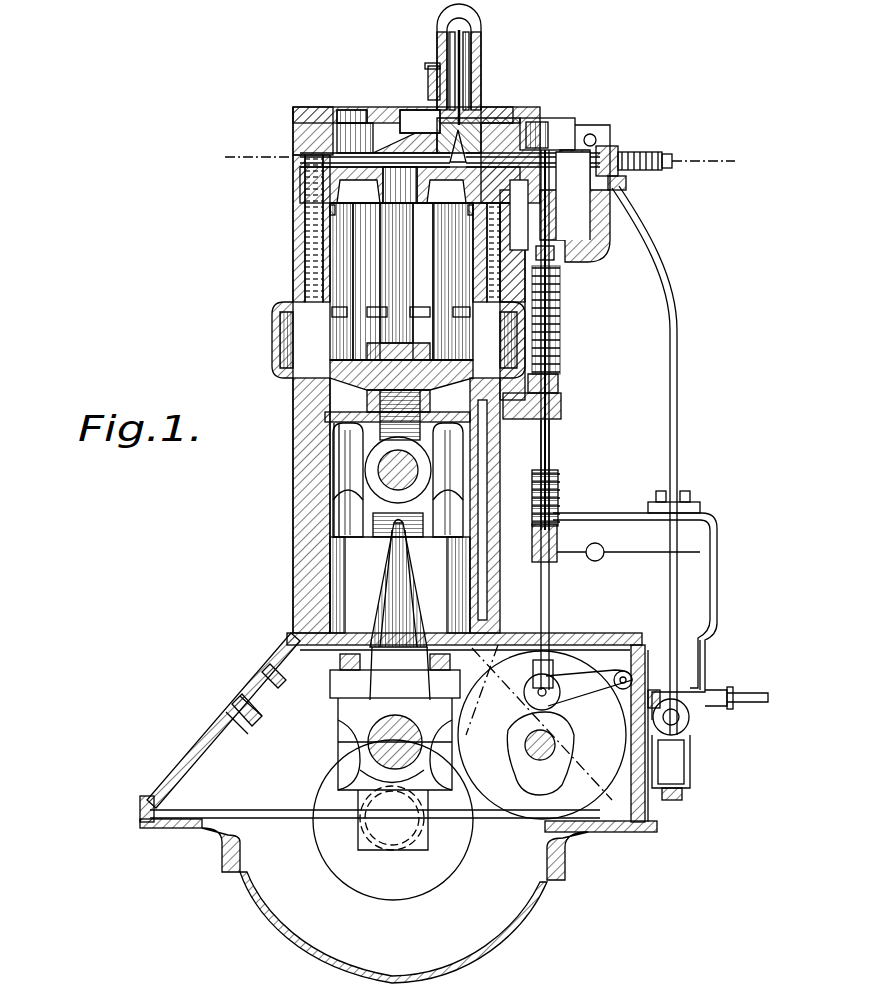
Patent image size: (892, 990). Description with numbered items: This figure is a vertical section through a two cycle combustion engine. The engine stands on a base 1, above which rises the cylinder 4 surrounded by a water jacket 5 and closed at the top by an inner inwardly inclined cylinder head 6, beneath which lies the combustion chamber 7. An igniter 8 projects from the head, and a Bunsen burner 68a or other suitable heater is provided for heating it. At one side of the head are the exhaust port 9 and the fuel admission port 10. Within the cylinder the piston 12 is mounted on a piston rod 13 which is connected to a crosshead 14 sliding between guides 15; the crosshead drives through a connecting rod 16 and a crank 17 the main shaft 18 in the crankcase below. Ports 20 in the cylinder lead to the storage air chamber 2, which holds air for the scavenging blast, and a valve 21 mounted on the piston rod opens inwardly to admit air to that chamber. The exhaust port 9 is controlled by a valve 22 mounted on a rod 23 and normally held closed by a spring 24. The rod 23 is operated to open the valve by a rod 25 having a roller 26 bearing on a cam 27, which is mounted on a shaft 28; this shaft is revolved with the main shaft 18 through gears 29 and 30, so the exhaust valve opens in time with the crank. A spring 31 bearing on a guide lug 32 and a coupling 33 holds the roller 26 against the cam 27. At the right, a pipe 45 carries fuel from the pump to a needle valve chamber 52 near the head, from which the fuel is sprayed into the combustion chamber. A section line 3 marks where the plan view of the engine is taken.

The base 1 is at (205, 757).
The storage air chamber 2 is at (325, 548).
The section line 3 is at (478, 160).
The cylinder 4 is at (350, 252).
The water jacket 5 is at (320, 222).
The inner inwardly inclined cylinder head 6 is at (395, 118).
The combustion chamber 7 is at (492, 150).
The igniter 8 is at (478, 48).
The Bunsen burner 68a is at (428, 76).
The exhaust port 9 is at (568, 160).
The fuel admission port 10 is at (600, 140).
The piston 12 is at (328, 188).
The piston rod 13 is at (395, 288).
The crosshead 14 is at (350, 458).
The guides 15 is at (345, 436).
The connecting rod 16 is at (392, 590).
The crank 17 is at (372, 800).
The main shaft 18 is at (370, 822).
The ports 20 is at (380, 314).
The valve 21 is at (340, 384).
The valve 22 is at (530, 150).
The rod 23 is at (553, 268).
The spring 24 is at (560, 300).
The rod 25 is at (552, 432).
The roller 26 is at (524, 700).
The cam 27 is at (528, 783).
The shaft 28 is at (524, 740).
The gear 29 is at (535, 826).
The gear 30 is at (458, 862).
The spring 31 is at (560, 490).
The guide lug 32 is at (560, 405).
The coupling 33 is at (557, 533).
The pipe 45 is at (677, 425).
The needle valve chamber 52 is at (630, 158).